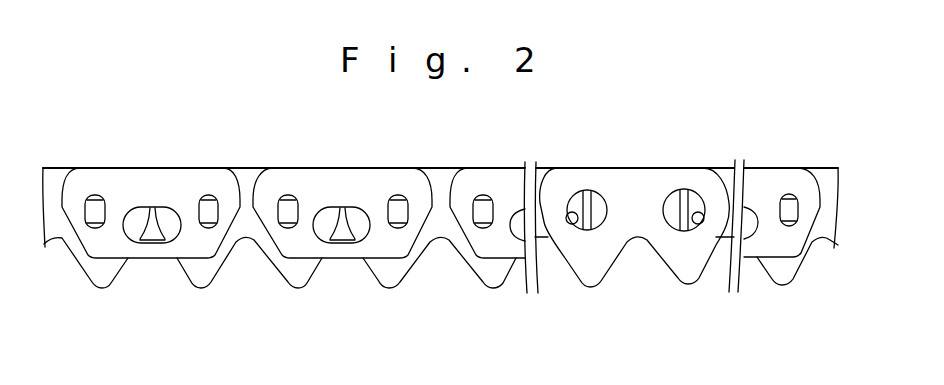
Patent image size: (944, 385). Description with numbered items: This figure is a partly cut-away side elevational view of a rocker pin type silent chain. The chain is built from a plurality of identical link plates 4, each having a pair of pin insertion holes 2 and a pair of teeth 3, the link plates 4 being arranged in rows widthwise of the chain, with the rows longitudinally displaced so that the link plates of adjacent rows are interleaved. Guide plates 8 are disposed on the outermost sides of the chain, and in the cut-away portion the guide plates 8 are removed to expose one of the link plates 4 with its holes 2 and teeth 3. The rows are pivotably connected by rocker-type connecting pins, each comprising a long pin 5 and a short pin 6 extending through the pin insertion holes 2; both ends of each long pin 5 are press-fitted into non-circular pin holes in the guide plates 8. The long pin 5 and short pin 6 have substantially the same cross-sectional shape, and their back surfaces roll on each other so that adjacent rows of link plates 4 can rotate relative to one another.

The pin insertion hole 2 is at (570, 224).
The tooth 3 is at (203, 277).
The link plate 4 is at (648, 182).
The long pin 5 is at (483, 212).
The short pin 6 is at (600, 203).
The guide plate 8 is at (156, 178).